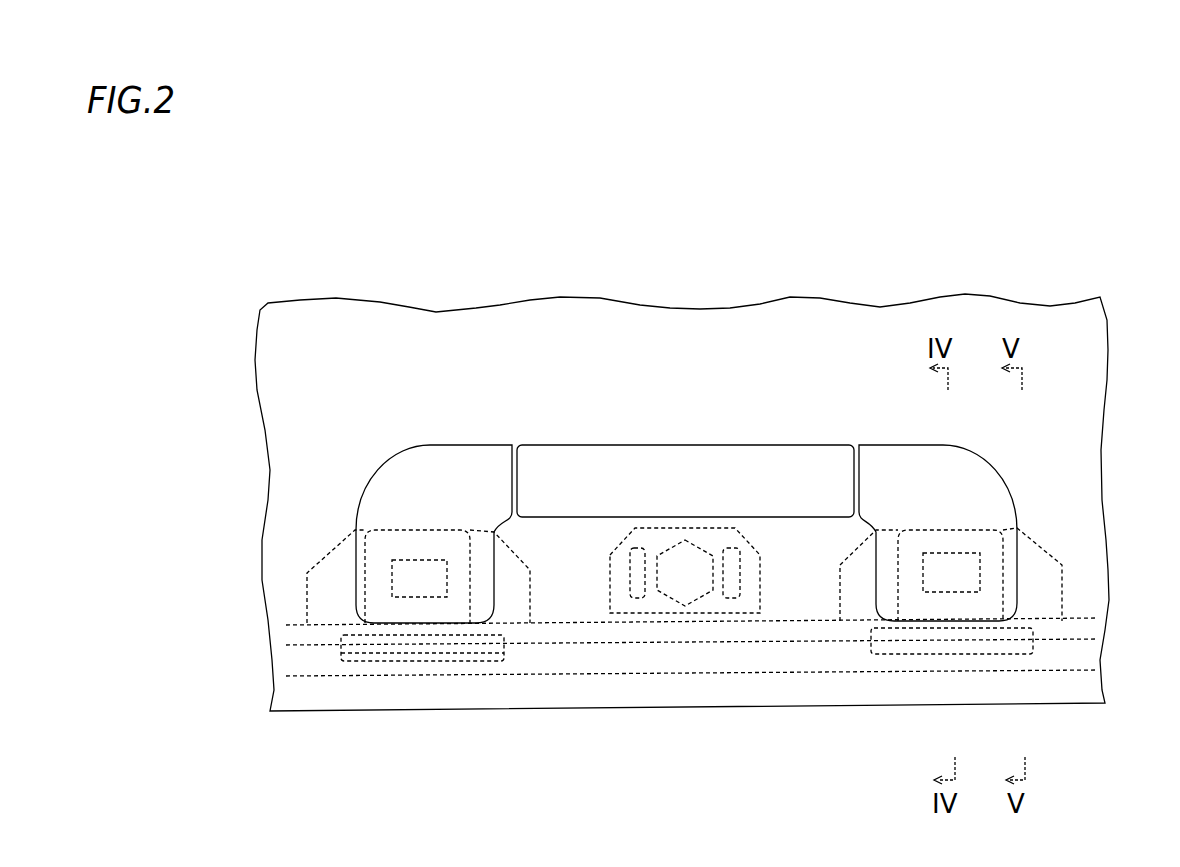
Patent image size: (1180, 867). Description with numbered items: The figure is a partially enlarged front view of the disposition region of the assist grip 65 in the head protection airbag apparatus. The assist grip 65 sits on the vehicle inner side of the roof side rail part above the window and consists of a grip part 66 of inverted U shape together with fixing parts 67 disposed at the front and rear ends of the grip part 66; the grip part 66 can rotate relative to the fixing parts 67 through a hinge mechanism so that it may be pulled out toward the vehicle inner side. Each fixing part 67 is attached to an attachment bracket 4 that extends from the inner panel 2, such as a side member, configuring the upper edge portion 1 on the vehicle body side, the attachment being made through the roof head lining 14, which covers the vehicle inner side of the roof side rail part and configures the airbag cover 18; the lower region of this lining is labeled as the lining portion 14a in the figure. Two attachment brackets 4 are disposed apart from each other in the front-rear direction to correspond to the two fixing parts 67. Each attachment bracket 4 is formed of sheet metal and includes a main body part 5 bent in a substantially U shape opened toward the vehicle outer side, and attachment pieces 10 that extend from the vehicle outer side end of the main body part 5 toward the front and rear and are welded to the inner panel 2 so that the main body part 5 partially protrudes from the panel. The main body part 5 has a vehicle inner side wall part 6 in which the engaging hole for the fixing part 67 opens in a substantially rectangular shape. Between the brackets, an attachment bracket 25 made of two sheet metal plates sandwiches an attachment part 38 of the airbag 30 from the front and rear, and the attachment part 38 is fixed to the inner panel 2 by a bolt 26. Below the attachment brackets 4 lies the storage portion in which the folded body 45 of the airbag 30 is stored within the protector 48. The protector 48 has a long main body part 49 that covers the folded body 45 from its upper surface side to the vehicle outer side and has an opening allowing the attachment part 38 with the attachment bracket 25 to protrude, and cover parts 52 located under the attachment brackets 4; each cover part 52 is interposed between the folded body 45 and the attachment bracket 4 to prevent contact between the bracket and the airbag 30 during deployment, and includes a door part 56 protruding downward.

The upper edge portion 1 is at (682, 467).
The inner panel 2 is at (682, 467).
The roof head lining 14 is at (728, 347).
The pad bottom surface 14a is at (703, 710).
The airbag cover 18 is at (684, 765).
The attachment bracket 4 is at (686, 468).
The main body part 5 is at (686, 523).
The vehicle inner side wall part 6 is at (428, 550).
The attachment piece 10 is at (318, 560).
The attachment bracket 25 is at (652, 530).
The bolt 26 is at (685, 530).
The airbag 30 is at (690, 731).
The attachment part 38 is at (722, 530).
The folded body 45 is at (597, 676).
The protector 48 is at (532, 652).
The main body part 49 is at (796, 642).
The cover part 52 is at (361, 684).
The door part 56 is at (413, 653).
The assist grip 65 is at (547, 432).
The grip part 66 is at (578, 458).
The fixing part 67 is at (375, 558).